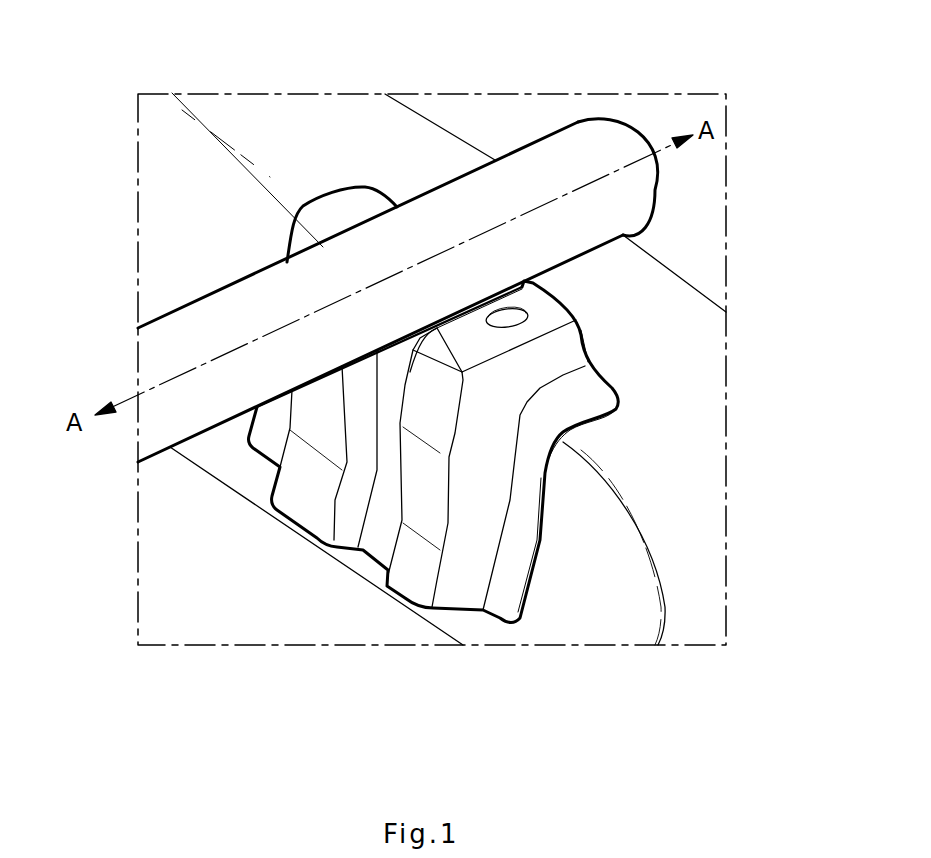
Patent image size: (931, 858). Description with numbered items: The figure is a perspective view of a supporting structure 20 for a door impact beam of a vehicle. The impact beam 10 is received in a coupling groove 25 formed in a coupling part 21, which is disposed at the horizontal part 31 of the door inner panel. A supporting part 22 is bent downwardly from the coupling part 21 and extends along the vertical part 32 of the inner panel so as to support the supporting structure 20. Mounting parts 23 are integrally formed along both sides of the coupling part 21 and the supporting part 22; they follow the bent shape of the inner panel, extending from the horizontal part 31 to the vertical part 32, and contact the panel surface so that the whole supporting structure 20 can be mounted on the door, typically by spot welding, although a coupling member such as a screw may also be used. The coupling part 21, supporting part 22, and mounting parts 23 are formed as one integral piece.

The impact beam 10 is at (608, 137).
The supporting structure 20 is at (488, 448).
The coupling part 21 is at (590, 342).
The supporting part 22 is at (325, 490).
The mounting parts 23 is at (527, 540).
The coupling groove 25 is at (397, 358).
The horizontal part 31 is at (322, 127).
The vertical part 32 is at (172, 235).